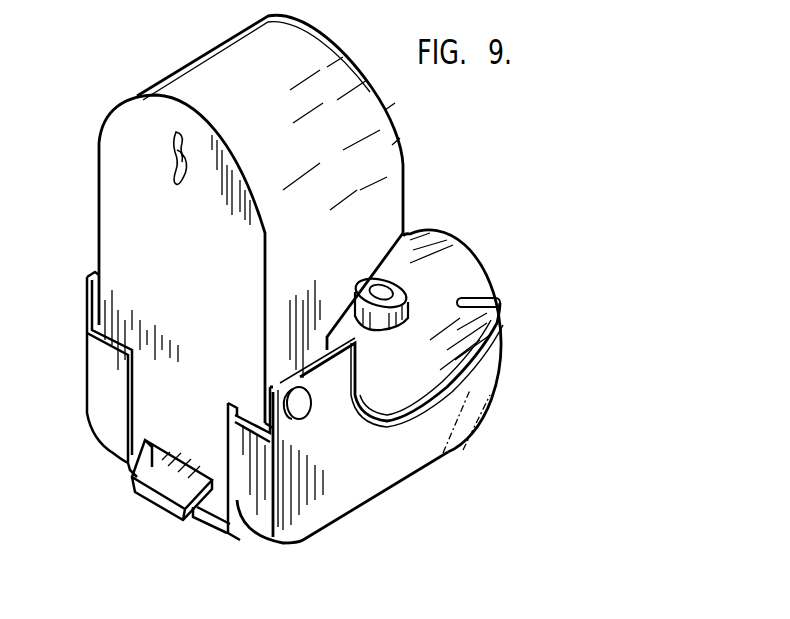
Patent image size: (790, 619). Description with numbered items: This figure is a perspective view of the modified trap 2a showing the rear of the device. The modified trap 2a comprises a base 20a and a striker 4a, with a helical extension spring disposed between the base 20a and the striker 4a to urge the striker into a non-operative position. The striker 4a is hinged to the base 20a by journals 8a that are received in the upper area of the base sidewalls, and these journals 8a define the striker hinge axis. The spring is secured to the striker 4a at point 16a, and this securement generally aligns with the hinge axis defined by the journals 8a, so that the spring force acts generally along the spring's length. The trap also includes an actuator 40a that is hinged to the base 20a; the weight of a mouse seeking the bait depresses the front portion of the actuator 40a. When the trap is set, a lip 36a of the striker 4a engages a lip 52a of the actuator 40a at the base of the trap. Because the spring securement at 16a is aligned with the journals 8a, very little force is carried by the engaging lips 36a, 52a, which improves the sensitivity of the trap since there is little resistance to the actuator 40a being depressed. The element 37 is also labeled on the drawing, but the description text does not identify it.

The modified trap 2a is at (488, 166).
The striker 4a is at (406, 151).
The journals 8a is at (310, 402).
The spring securement point on striker 16a is at (171, 155).
The base 20a is at (442, 431).
The lip of the striker 36a is at (233, 532).
The retaining tab 37 is at (132, 462).
The actuator 40a is at (447, 277).
The lip of the actuator 52a is at (190, 515).